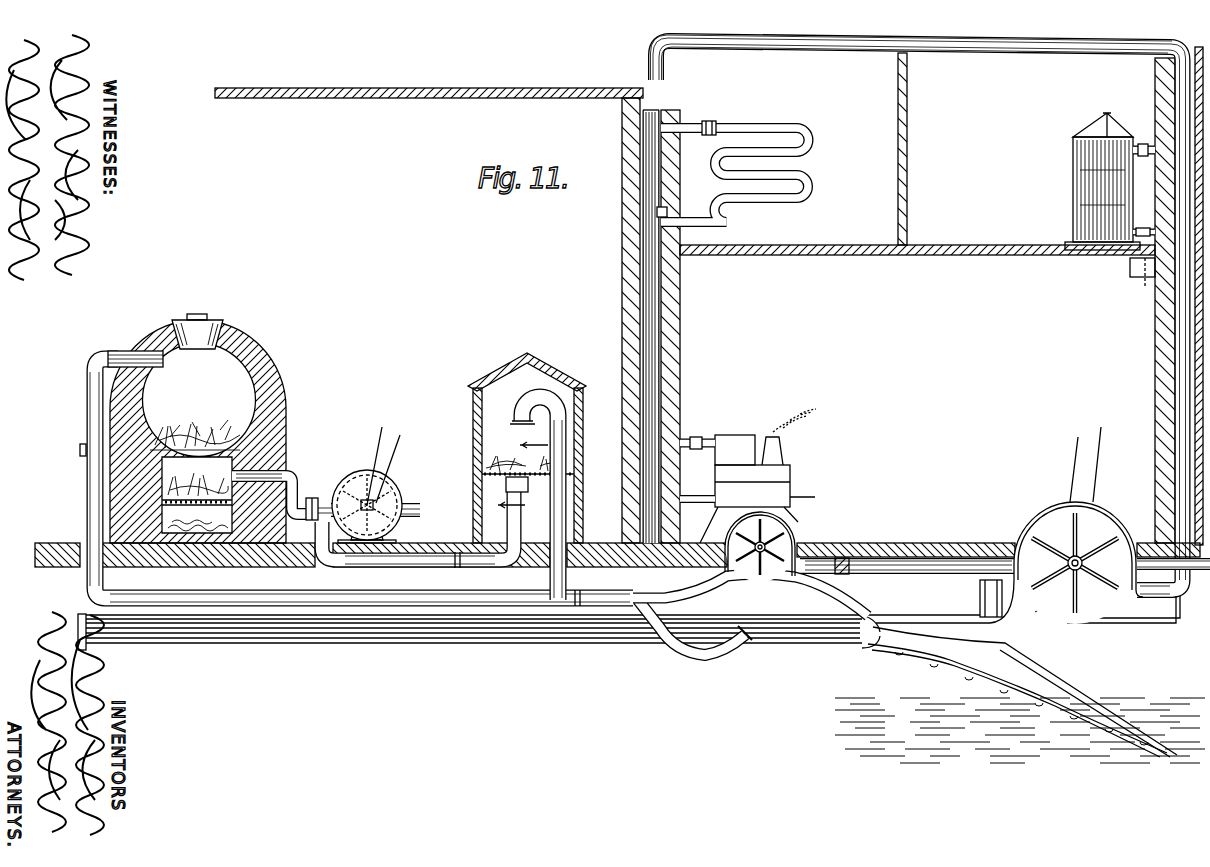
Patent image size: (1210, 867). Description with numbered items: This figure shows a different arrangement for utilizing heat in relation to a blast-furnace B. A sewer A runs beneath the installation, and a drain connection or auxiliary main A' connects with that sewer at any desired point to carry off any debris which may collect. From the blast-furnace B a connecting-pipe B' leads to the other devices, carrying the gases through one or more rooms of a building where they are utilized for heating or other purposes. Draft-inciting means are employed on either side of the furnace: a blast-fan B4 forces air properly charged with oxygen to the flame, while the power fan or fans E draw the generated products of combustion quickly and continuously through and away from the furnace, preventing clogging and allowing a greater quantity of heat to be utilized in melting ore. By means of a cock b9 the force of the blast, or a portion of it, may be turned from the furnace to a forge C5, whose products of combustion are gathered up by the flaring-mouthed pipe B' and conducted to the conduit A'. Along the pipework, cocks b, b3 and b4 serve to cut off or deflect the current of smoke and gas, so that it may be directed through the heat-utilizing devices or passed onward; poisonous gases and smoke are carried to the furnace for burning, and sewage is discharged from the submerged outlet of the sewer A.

The sewer A is at (629, 668).
The drain connection or auxiliary main A' is at (418, 542).
The blast-furnace B is at (183, 428).
The connecting-pipe B' is at (457, 382).
The blast-fan B4 is at (369, 485).
The cock b9 is at (308, 497).
The forge C5 is at (527, 443).
The power fan E is at (790, 524).
The cock b is at (713, 126).
The cock b3 is at (667, 215).
The cock b4 is at (703, 222).